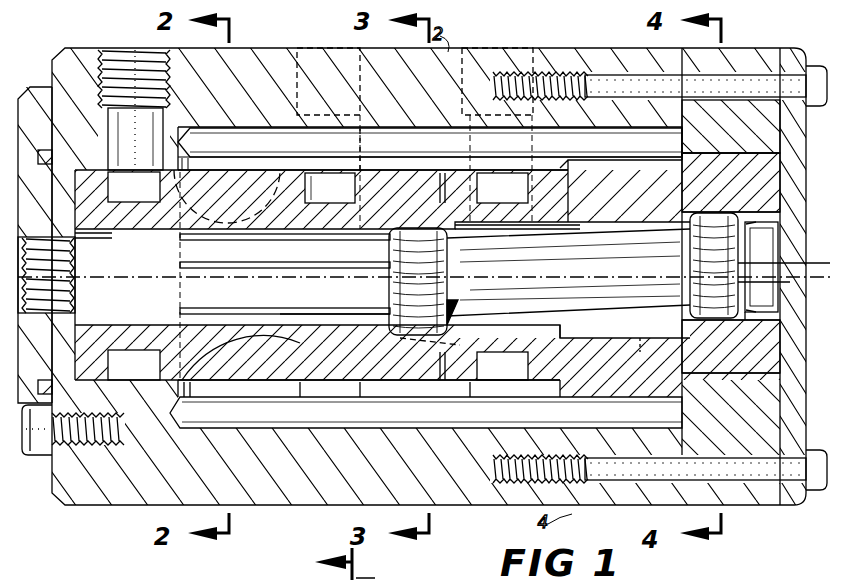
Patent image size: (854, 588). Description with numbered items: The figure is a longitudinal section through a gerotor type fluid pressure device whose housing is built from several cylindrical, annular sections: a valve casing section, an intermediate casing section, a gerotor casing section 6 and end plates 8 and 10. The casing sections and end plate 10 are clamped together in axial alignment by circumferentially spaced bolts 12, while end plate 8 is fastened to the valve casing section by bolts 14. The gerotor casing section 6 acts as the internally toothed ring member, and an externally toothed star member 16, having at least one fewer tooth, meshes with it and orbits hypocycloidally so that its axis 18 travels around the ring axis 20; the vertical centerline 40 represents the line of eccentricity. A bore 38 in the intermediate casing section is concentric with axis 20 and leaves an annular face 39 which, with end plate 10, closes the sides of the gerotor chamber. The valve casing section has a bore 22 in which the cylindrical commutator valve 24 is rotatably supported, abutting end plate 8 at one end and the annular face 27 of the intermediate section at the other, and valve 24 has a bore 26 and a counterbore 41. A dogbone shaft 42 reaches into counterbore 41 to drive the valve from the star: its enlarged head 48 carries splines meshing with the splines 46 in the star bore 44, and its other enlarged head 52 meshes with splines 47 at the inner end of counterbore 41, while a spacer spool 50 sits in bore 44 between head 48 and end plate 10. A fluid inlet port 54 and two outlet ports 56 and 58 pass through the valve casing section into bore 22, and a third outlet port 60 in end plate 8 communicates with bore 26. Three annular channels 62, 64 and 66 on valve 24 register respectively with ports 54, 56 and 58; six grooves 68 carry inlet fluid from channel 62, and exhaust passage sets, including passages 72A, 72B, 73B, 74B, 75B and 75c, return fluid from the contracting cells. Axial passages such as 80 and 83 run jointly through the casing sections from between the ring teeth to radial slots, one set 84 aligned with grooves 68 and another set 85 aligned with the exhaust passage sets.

The end plate 10 is at (788, 44).
The end plate 8 is at (40, 92).
The gerotor casing section 6 is at (760, 54).
The counterbore 41 is at (548, 336).
The bore 22 is at (74, 196).
The annular face 27 is at (566, 196).
The shaft 42 is at (600, 336).
The bore 38 is at (645, 346).
The grooves 68 is at (420, 350).
The passage 80 is at (430, 140).
The set of slots 85 is at (230, 164).
The commutator valve 24 is at (382, 180).
The passage 83 is at (375, 426).
The fluid outlet port 58 is at (118, 50).
The fluid inlet port 54 is at (510, 60).
The bolts 12 is at (766, 478).
The bolts 14 is at (38, 455).
The fluid outlet port 60 is at (58, 316).
The annular channel 66 is at (158, 194).
The annular channel 64 is at (352, 191).
The annular channel 62 is at (522, 206).
The splines 47 is at (460, 322).
The set of slots 84 is at (440, 178).
The star member 16 is at (758, 160).
The annular face 39 is at (686, 202).
The splines 46 is at (684, 318).
The axis 20 is at (762, 312).
The bore 26 is at (114, 238).
The exhaust passage 72B is at (288, 246).
The exhaust passage 73B is at (285, 270).
The exhaust passage 74B is at (178, 311).
The exhaust passage 75B is at (284, 314).
The exhaust passage 72A is at (232, 216).
The exhaust passage 75c is at (290, 356).
The axis 18 is at (788, 262).
The enlarged head 52 is at (440, 270).
The bore 44 is at (690, 305).
The enlarged head 48 is at (700, 254).
The spacer spool 50 is at (755, 222).
The fluid outlet port 56 is at (300, 50).
The vertical centerline 40 is at (384, 567).